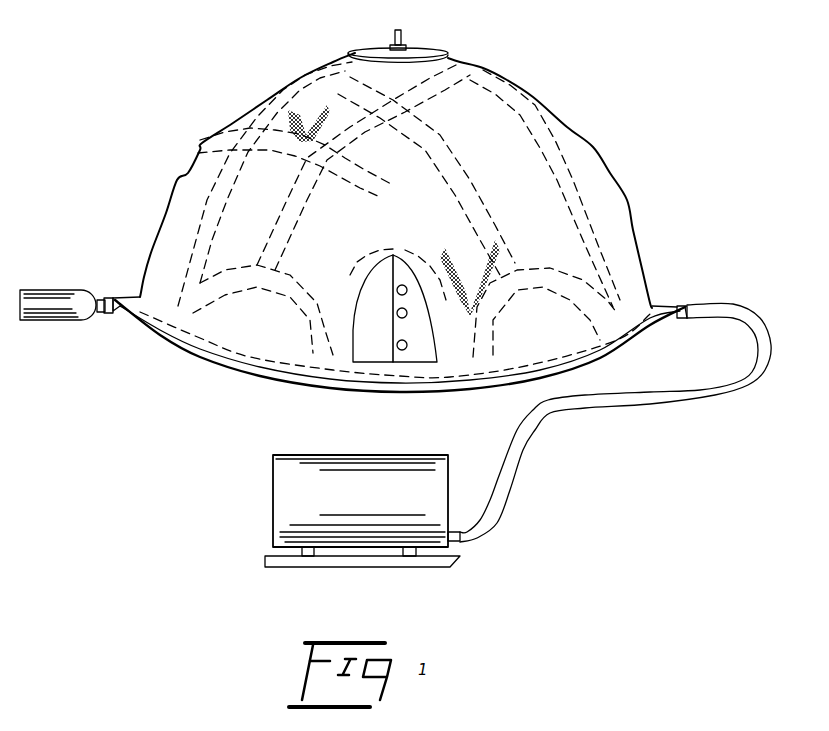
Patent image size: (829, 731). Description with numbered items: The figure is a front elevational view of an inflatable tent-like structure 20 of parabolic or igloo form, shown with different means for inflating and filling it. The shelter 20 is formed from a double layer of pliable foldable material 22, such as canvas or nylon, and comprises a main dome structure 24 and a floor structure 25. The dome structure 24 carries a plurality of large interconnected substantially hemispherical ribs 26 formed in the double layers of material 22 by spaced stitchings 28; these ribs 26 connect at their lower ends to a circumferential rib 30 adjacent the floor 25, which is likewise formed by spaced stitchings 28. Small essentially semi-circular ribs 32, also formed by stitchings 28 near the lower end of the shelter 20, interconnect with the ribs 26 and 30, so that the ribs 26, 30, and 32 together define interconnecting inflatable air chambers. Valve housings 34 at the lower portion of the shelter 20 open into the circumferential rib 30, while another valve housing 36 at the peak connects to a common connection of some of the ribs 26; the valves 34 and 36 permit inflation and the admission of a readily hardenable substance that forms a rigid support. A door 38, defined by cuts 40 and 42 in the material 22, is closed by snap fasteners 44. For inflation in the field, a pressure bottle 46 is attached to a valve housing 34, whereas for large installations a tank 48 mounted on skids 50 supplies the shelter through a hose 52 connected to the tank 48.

The inflatable tent-like structure 20 is at (418, 180).
The pliable foldable material 22 is at (624, 216).
The main dome structure 24 is at (178, 170).
The floor structure 25 is at (242, 383).
The hemispherical ribs 26 is at (237, 172).
The spaced stitchings 28 is at (448, 180).
The circumferential rib 30 is at (536, 349).
The semi-circular ribs 32 is at (288, 283).
The valve housings 34 is at (120, 296).
The valve housing 36 is at (402, 36).
The door 38 is at (380, 341).
The cut 40 is at (389, 286).
The cut 42 is at (412, 350).
The snap fasteners 44 is at (396, 314).
The pressure bottle 46 is at (78, 291).
The tank 48 is at (276, 488).
The skids 50 is at (293, 560).
The hose 52 is at (532, 426).